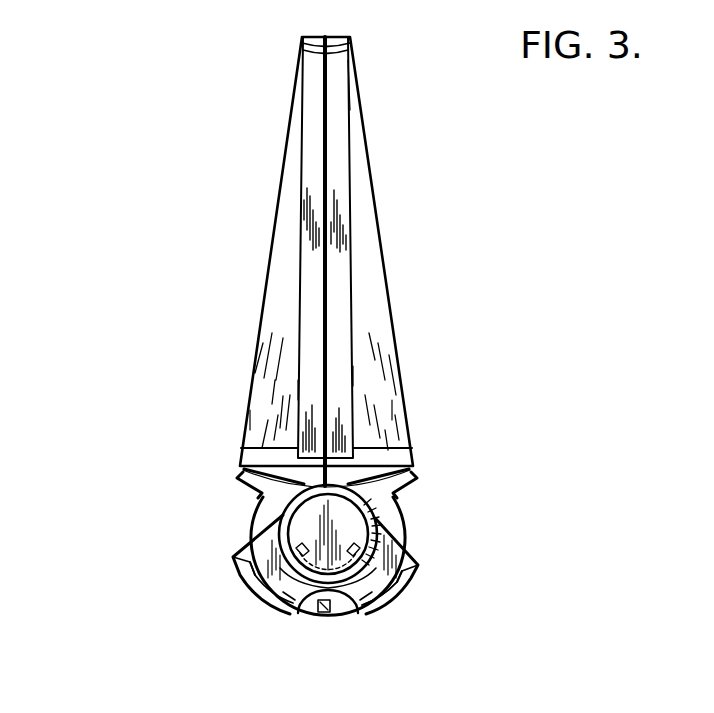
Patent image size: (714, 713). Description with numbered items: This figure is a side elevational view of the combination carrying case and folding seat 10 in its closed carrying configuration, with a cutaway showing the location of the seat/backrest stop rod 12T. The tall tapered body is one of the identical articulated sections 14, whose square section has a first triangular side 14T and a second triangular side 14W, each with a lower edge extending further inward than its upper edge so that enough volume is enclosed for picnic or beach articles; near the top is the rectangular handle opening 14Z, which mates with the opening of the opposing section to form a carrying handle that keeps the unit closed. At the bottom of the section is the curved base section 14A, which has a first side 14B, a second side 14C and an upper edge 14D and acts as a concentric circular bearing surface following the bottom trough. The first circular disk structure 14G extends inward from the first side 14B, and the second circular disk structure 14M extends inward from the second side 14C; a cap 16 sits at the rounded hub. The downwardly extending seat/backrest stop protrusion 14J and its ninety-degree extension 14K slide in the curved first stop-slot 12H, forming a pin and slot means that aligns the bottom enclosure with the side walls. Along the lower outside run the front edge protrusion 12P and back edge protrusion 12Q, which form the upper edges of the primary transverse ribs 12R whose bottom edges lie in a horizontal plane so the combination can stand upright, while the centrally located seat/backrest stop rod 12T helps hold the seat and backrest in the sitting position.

The combination carrying case and folding seat 10 is at (500, 220).
The articulated section 14 is at (275, 207).
The curved base section 14A is at (252, 517).
The first side 14B is at (303, 37).
The second side 14C is at (405, 520).
The upper edge 14D is at (414, 478).
The first circular disk structure 14G is at (332, 540).
The seat/backrest stop protrusion 14J is at (283, 592).
The extension 14K is at (366, 596).
The second circular disk structure 14M is at (328, 578).
The first triangular side 14T is at (343, 374).
The second triangular side 14W is at (255, 419).
The handle opening 14Z is at (349, 85).
The cap 16 is at (405, 502).
The first stop-slot 12H is at (412, 590).
The front edge protrusion 12P is at (413, 578).
The back edge protrusion 12Q is at (228, 565).
The primary transverse rib 12R is at (247, 586).
The seat/backrest stop rod 12T is at (330, 614).